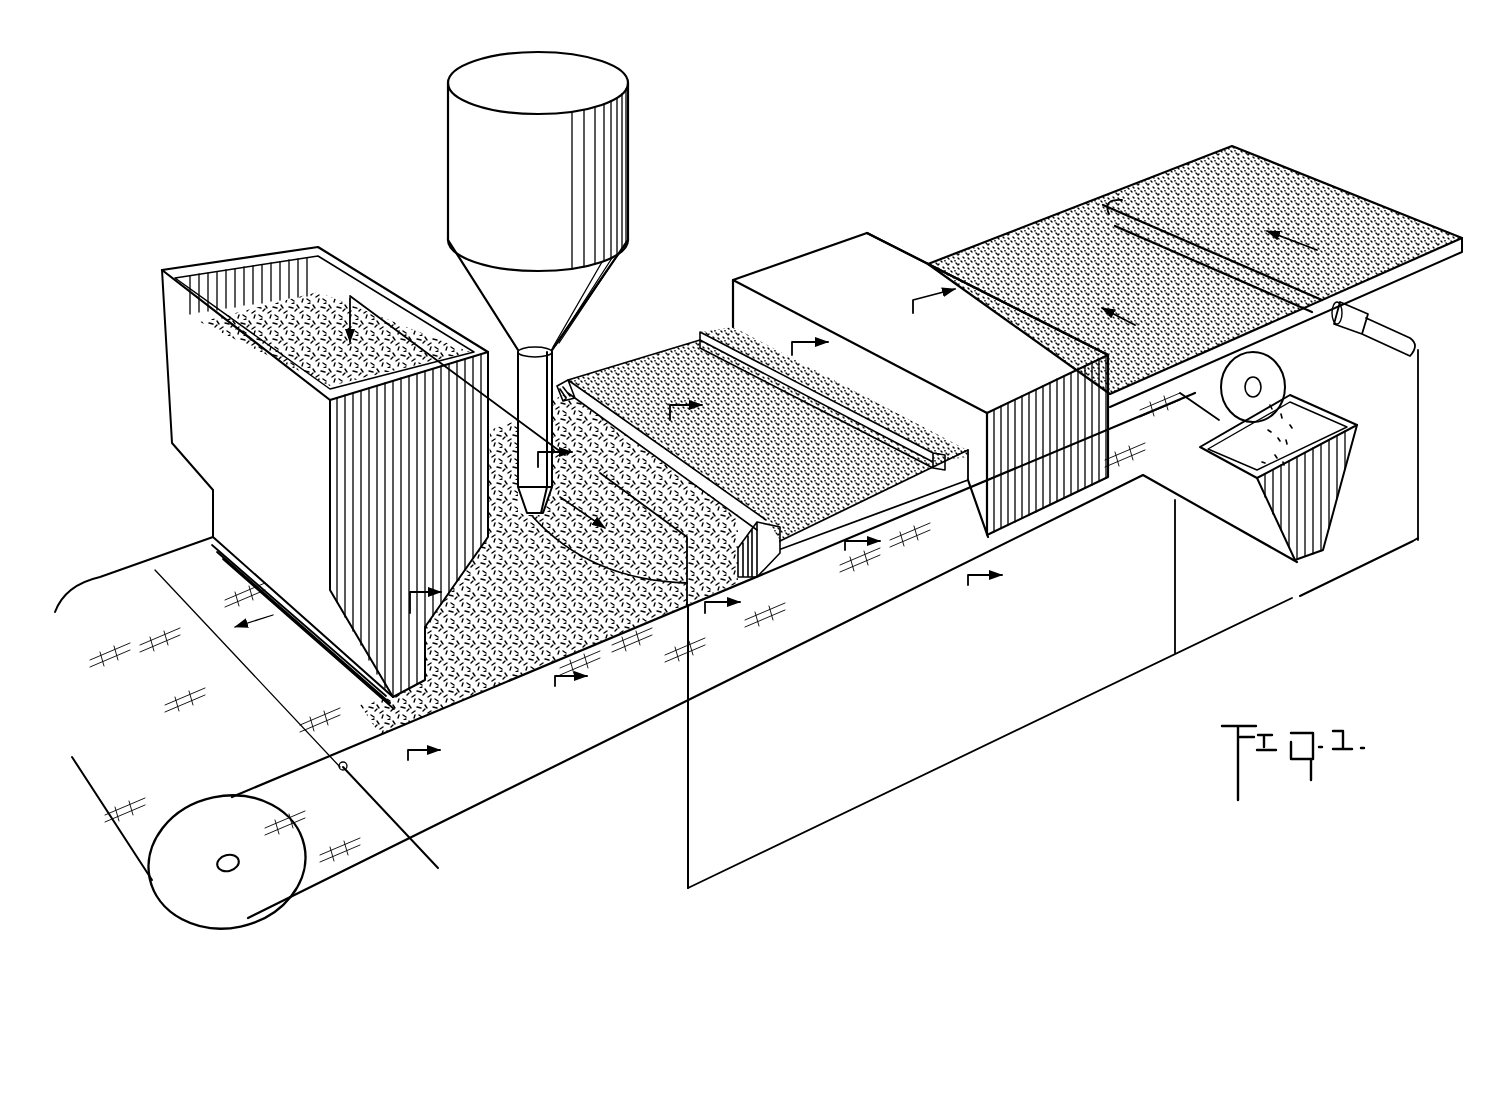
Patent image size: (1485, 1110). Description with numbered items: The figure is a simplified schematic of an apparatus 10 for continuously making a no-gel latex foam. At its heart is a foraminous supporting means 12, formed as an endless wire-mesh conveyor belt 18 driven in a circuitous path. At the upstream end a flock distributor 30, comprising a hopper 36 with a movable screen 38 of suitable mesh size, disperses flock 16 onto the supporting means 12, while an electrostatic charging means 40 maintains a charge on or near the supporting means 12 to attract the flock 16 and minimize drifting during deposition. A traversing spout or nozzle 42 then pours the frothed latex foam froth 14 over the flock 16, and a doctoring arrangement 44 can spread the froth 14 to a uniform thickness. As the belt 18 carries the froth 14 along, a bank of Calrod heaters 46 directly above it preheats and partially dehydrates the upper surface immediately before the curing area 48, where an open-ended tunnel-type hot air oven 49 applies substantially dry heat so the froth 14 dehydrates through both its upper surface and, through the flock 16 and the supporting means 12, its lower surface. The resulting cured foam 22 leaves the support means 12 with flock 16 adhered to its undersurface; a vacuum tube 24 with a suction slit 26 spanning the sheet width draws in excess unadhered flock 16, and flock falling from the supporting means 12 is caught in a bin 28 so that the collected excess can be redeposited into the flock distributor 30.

The apparatus 10 is at (941, 175).
The foraminous supporting means 12 is at (845, 632).
The latex foam froth 14 is at (633, 368).
The flock 16 is at (282, 308).
The conveyor belt 18 is at (752, 657).
The cured foam 22 is at (1028, 240).
The vacuum tube 24 is at (1368, 310).
The suction slit 26 is at (1122, 200).
The bin 28 is at (1328, 493).
The flock distributor 30 is at (158, 280).
The hopper 36 is at (185, 352).
The movable screen 38 is at (210, 540).
The electrostatic charging means 40 is at (344, 772).
The traversing spout or nozzle 42 is at (556, 356).
The doctoring arrangement 44 is at (572, 383).
The bank of Calrod heaters 46 is at (712, 332).
The curing area 48 is at (827, 258).
The tunnel-type hot air oven 49 is at (886, 245).